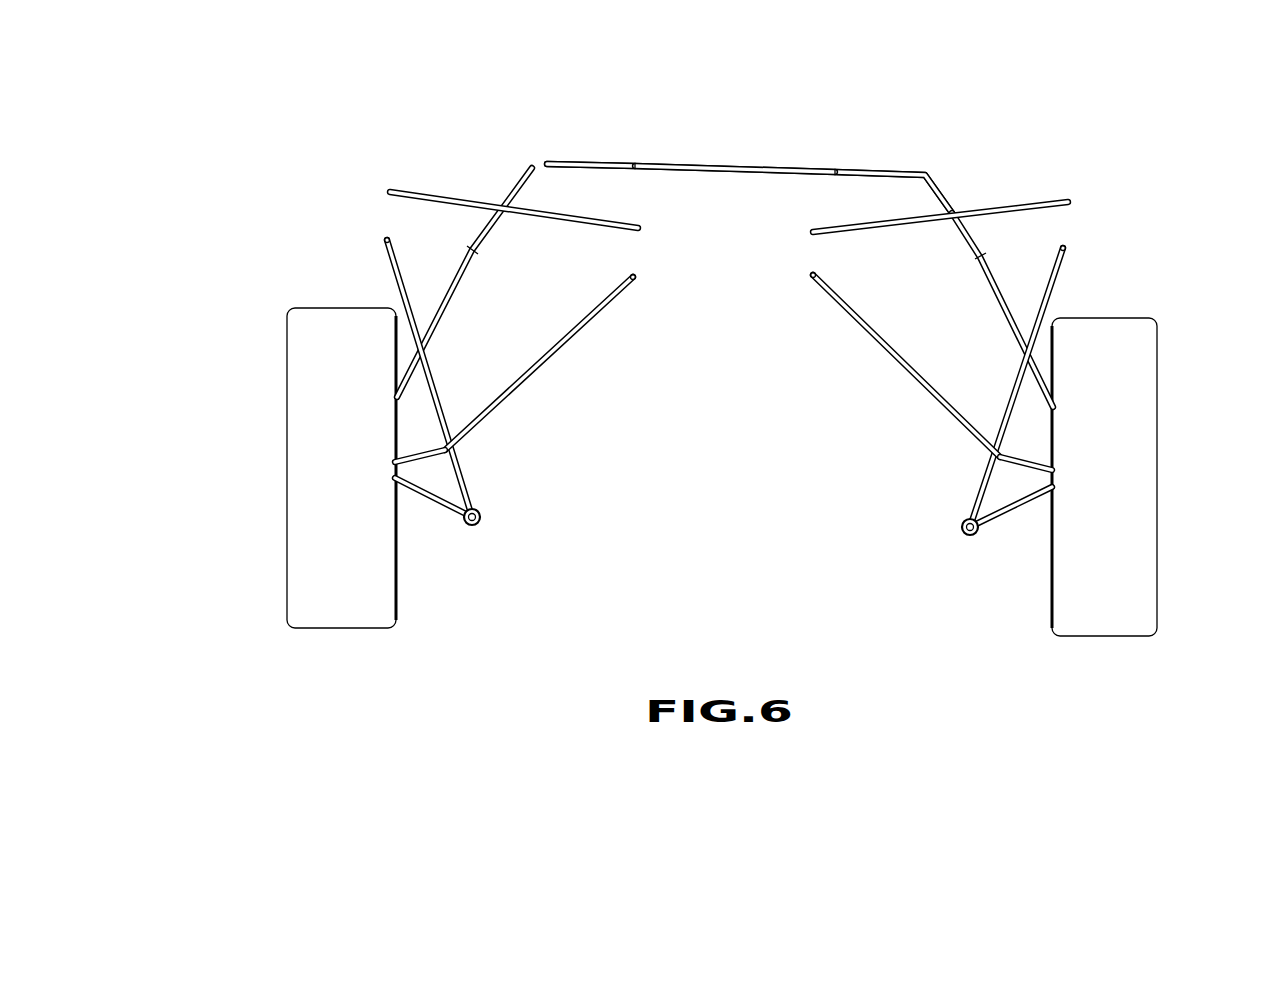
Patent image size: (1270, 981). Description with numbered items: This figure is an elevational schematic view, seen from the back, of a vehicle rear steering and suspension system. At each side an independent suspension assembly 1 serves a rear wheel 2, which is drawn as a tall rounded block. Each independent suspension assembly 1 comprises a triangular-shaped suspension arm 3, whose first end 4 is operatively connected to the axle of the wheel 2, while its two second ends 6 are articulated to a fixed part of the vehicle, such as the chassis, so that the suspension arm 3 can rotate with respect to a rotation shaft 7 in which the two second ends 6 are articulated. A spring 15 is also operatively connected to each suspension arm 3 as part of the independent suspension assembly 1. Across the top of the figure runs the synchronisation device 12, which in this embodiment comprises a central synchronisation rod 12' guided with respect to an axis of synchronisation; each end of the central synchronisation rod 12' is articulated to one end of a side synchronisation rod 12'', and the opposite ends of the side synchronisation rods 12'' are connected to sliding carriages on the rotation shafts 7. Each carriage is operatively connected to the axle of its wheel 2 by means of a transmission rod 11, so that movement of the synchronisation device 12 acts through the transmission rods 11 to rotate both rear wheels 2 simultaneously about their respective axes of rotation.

The independent suspension assembly 1 is at (472, 483).
The rear wheel 2 is at (318, 347).
The suspension arm 3 is at (433, 383).
The first end 4 is at (447, 449).
The second ends 6 is at (385, 238).
The rotation shaft 7 is at (418, 192).
The transmission rod 11 is at (453, 298).
The synchronisation device 12 is at (749, 115).
The central synchronisation rod 12' is at (735, 112).
The side synchronisation rod 12'' is at (749, 133).
The spring 15 is at (478, 523).